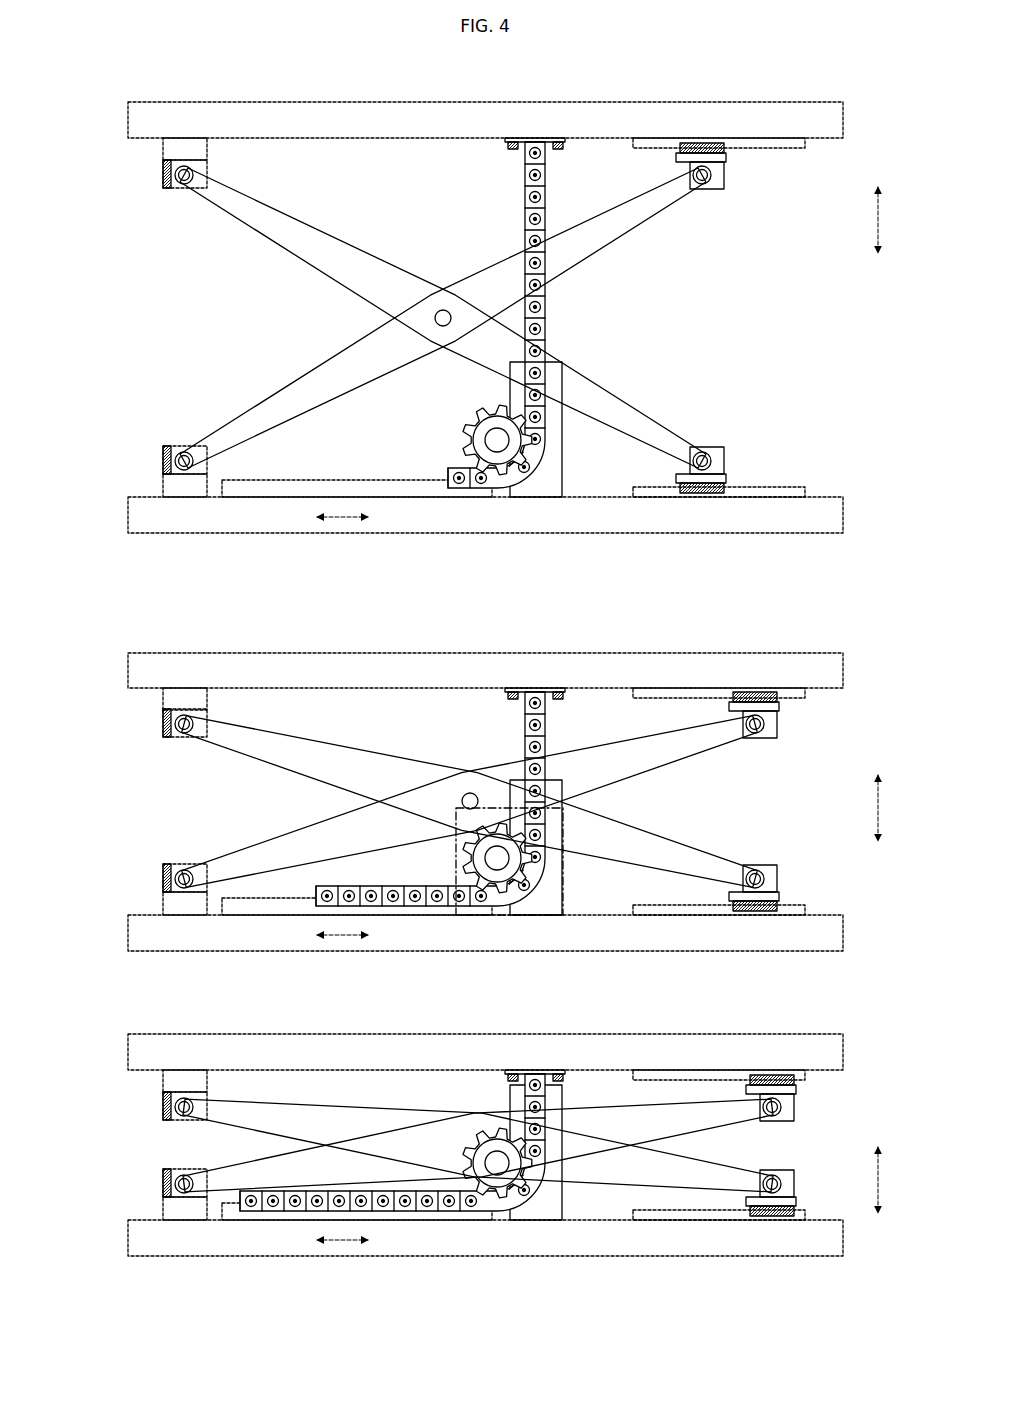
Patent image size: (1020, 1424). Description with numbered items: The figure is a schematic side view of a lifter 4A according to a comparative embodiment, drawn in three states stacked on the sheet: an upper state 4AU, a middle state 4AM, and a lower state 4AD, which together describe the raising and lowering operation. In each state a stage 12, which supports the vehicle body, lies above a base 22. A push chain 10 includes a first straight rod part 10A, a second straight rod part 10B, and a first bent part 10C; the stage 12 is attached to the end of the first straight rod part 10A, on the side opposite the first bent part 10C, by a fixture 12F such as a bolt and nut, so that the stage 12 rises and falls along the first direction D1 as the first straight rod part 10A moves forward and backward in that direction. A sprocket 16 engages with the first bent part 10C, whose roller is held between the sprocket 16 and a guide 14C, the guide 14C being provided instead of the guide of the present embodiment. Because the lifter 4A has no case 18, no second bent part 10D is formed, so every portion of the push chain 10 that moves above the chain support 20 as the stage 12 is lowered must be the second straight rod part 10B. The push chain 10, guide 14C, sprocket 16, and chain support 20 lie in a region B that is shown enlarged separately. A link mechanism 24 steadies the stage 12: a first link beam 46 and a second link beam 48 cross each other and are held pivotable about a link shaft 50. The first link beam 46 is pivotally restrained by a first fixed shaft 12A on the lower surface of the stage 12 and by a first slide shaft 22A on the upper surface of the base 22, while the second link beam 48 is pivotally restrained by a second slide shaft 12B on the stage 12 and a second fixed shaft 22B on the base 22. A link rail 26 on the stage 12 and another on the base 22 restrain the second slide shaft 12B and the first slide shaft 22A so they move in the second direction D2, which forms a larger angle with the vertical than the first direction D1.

The lifter 4A is at (76, 86).
The upper position state 4AU is at (860, 160).
The middle position state 4AM is at (860, 710).
The lower position state 4AD is at (860, 1093).
The stage 12 is at (128, 124).
The first fixed shaft 12A is at (165, 175).
The second slide shaft 12B is at (724, 175).
The fixture 12F is at (513, 138).
The base 22 is at (128, 519).
The first slide shaft 22A is at (724, 461).
The second fixed shaft 22B is at (165, 461).
The link mechanism 24 is at (476, 731).
The first link beam 46 is at (345, 243).
The second link beam 48 is at (345, 350).
The link shaft 50 is at (443, 310).
The push chain 10 is at (357, 718).
The first straight rod part 10A is at (548, 318).
The second straight rod part 10B is at (463, 486).
The first bent part 10C is at (526, 484).
The second bent part 10D is at (222, 1160).
The sprocket 16 is at (462, 432).
The guide 14C is at (566, 472).
The chain support 20 is at (300, 490).
The link rail 26 is at (658, 138).
The case 18 is at (235, 1088).
The region B is at (566, 866).
The first direction D1 is at (894, 700).
The second direction D2 is at (342, 520).